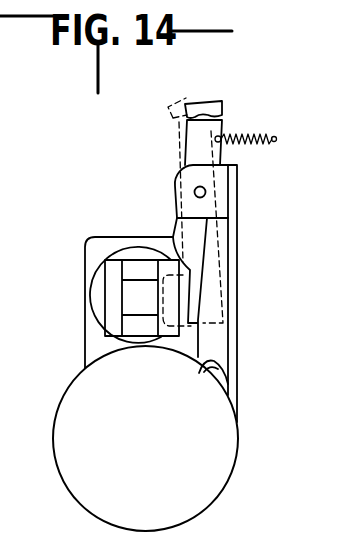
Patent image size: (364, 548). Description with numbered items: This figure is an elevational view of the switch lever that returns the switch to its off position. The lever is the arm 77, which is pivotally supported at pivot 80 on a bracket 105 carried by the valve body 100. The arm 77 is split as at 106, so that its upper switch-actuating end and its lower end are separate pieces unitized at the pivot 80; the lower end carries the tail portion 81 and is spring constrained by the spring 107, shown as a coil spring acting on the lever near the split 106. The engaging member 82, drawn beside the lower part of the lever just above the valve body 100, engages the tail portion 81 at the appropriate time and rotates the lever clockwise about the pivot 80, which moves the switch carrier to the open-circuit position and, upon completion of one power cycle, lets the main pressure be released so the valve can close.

The arm 77 is at (222, 101).
The spring 107 is at (243, 137).
The split 106 is at (182, 162).
The pivot 80 is at (194, 190).
The bracket 105 is at (234, 237).
The tail portion 81 is at (200, 295).
The engaging member 82 is at (115, 320).
The valve body 100 is at (231, 485).